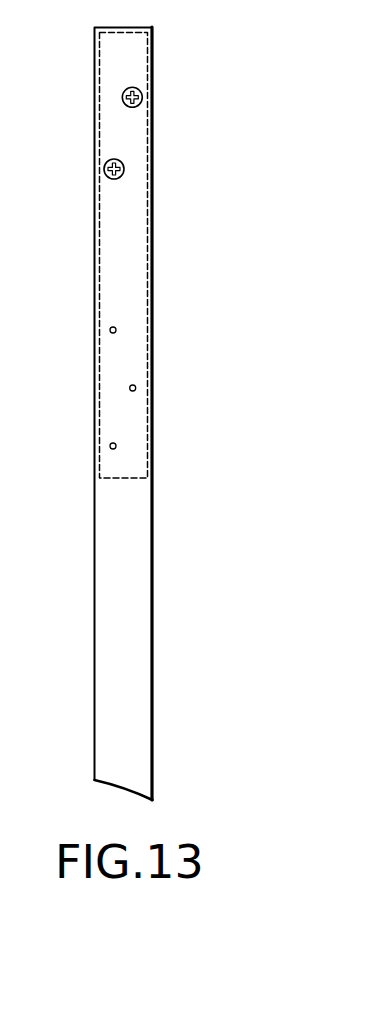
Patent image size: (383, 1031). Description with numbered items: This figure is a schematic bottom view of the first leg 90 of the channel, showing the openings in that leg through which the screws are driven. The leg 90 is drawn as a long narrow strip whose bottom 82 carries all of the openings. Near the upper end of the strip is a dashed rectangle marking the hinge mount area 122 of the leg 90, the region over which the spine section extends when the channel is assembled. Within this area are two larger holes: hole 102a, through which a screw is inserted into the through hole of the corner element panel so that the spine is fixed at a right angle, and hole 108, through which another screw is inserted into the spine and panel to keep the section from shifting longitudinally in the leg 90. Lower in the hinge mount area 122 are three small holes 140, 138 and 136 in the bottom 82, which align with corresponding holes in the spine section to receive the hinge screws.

The bottom 82 is at (143, 682).
The leg 90 is at (153, 515).
The hinge mount area 122 is at (101, 222).
The hole 102a is at (139, 90).
The hole 108 is at (121, 162).
The hole 140 is at (110, 328).
The hole 138 is at (135, 386).
The hole 136 is at (111, 444).